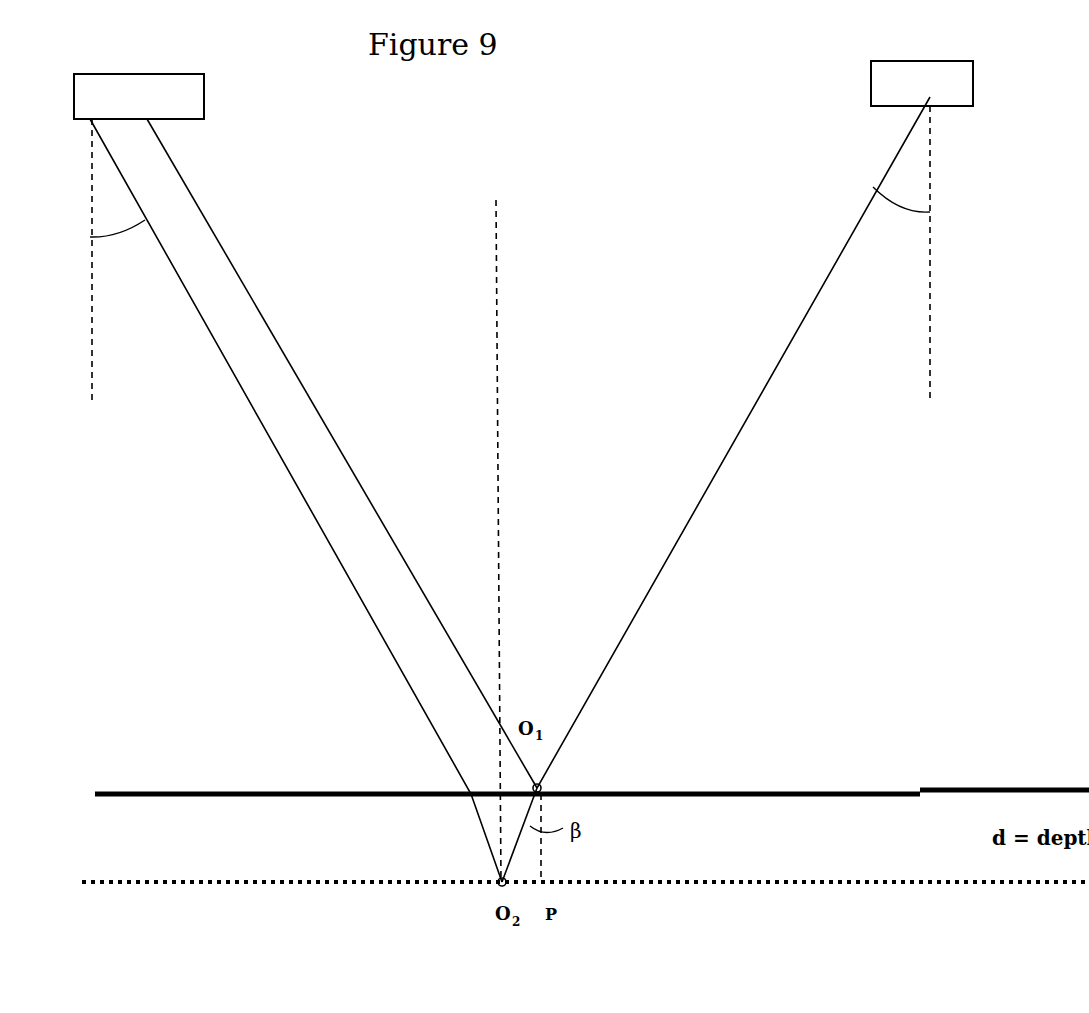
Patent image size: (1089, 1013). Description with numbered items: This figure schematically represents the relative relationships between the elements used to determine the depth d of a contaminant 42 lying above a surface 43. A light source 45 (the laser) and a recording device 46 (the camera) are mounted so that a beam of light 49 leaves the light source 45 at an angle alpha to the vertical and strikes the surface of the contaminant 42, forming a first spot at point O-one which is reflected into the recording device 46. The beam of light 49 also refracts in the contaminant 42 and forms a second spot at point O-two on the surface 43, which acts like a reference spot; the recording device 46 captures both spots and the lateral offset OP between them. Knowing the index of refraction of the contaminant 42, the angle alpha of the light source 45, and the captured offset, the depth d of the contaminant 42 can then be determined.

The contaminant 42 is at (799, 853).
The surface 43 is at (799, 937).
The light source 45 is at (873, 102).
The recording device 46 is at (198, 102).
The beam of light 49 is at (695, 505).